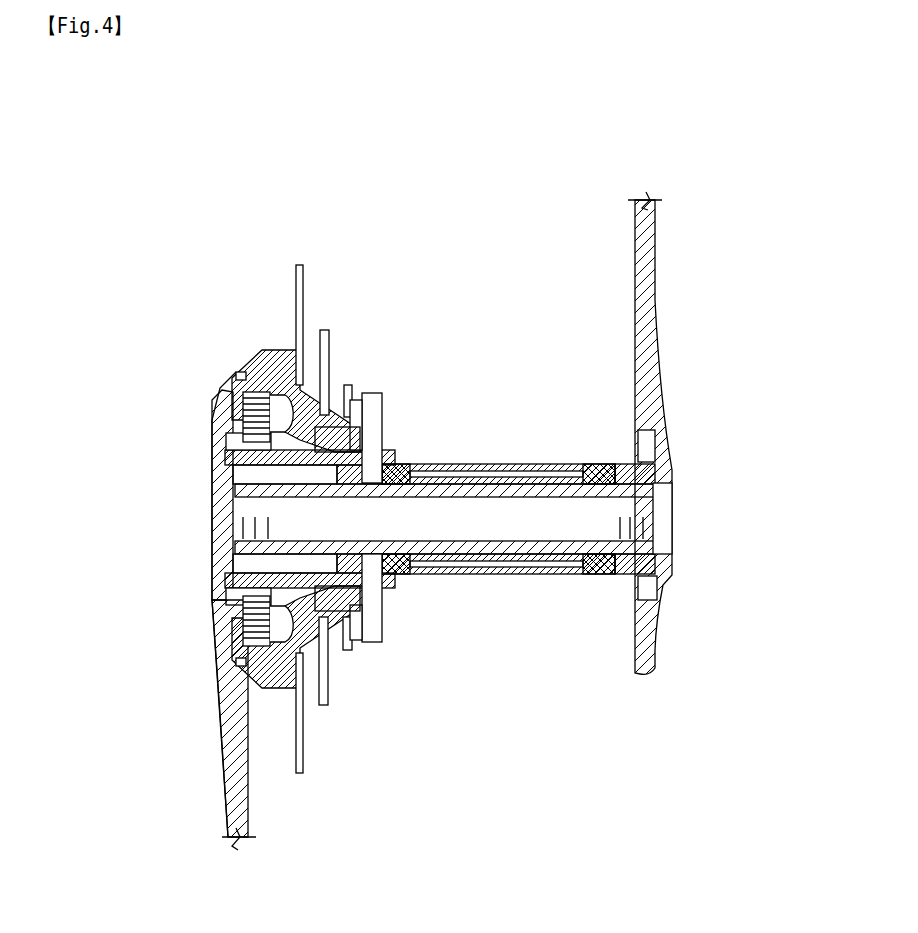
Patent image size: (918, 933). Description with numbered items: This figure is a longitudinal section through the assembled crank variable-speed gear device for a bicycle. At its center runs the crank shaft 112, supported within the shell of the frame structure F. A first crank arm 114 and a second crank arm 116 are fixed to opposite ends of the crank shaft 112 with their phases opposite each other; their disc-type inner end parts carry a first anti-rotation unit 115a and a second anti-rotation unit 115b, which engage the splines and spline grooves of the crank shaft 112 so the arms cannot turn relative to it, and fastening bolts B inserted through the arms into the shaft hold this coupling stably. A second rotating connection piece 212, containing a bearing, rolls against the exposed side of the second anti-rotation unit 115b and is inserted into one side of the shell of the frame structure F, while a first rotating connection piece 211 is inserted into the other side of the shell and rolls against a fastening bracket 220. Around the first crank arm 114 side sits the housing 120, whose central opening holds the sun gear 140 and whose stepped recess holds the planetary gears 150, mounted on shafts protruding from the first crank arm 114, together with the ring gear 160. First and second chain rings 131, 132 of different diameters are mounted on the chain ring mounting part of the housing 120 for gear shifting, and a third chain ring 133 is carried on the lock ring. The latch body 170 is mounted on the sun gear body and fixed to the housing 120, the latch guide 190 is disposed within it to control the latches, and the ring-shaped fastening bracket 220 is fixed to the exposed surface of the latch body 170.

The crank shaft 112 is at (478, 540).
The first crank arm 114 is at (216, 722).
The first anti-rotation unit 115a is at (240, 596).
The second anti-rotation unit 115b is at (633, 575).
The second crank arm 116 is at (668, 396).
The housing 120 is at (264, 352).
The first chain ring 131 is at (310, 275).
The second chain ring 132 is at (328, 350).
The third chain ring 133 is at (350, 386).
The sun gear 140 is at (288, 600).
The planetary gears 150 is at (228, 432).
The ring gear 160 is at (232, 378).
The latch body 170 is at (350, 428).
The latch guide 190 is at (370, 645).
The first rotating connection piece 211 is at (393, 467).
The second rotating connection piece 212 is at (640, 440).
The fastening bracket 220 is at (380, 622).
The fastening bolts B is at (218, 527).
The frame structure F is at (540, 460).